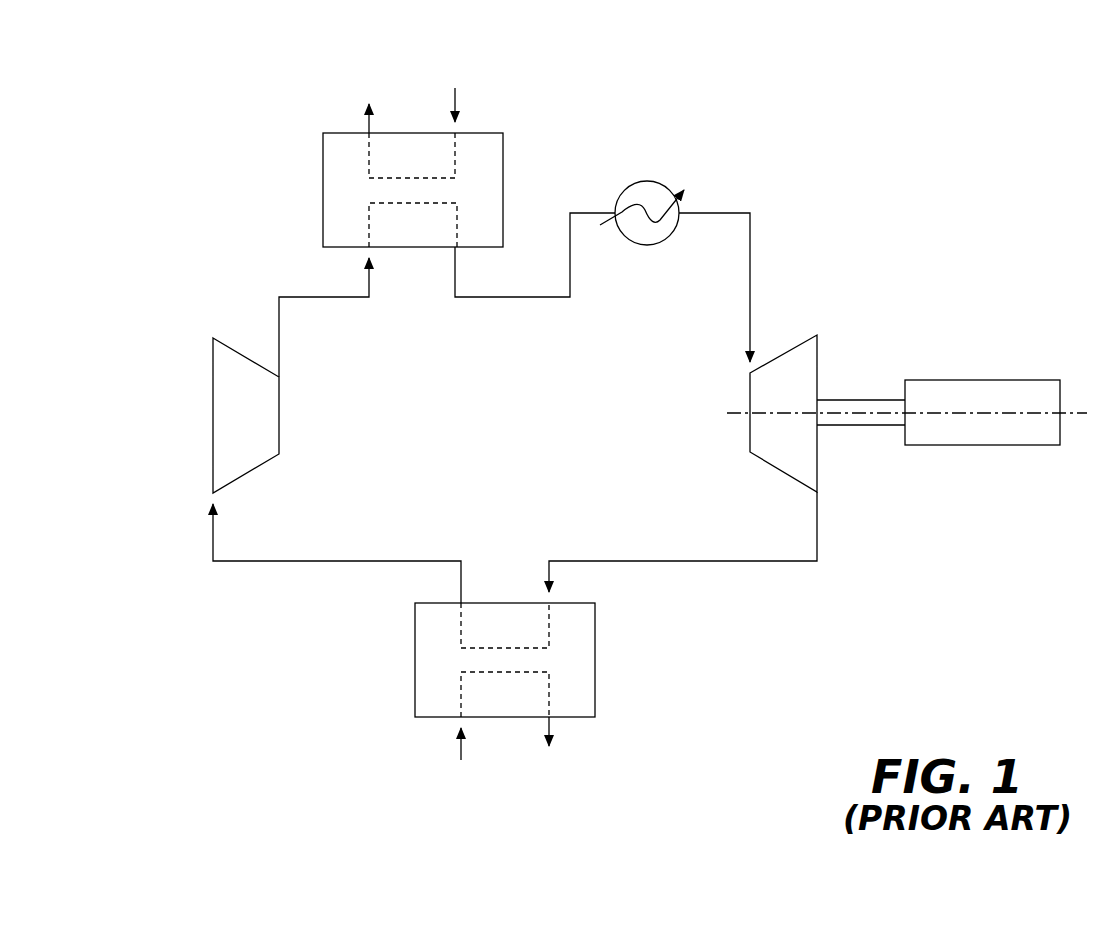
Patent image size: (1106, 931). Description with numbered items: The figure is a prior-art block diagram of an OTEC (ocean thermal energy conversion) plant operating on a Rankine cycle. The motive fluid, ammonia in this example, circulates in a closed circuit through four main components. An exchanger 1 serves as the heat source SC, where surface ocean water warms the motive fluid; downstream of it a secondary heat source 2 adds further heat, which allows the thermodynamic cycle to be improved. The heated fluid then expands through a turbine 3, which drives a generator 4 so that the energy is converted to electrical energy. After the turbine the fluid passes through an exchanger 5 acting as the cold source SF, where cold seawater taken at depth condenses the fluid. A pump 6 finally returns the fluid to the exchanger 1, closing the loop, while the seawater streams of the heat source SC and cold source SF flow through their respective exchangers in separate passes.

The exchanger 1 is at (503, 167).
The secondary heat source 2 is at (637, 182).
The turbine 3 is at (807, 370).
The generator 4 is at (990, 435).
The exchanger 5 is at (415, 657).
The pump 6 is at (224, 420).
The heat source SC is at (455, 99).
The cold source SF is at (461, 745).